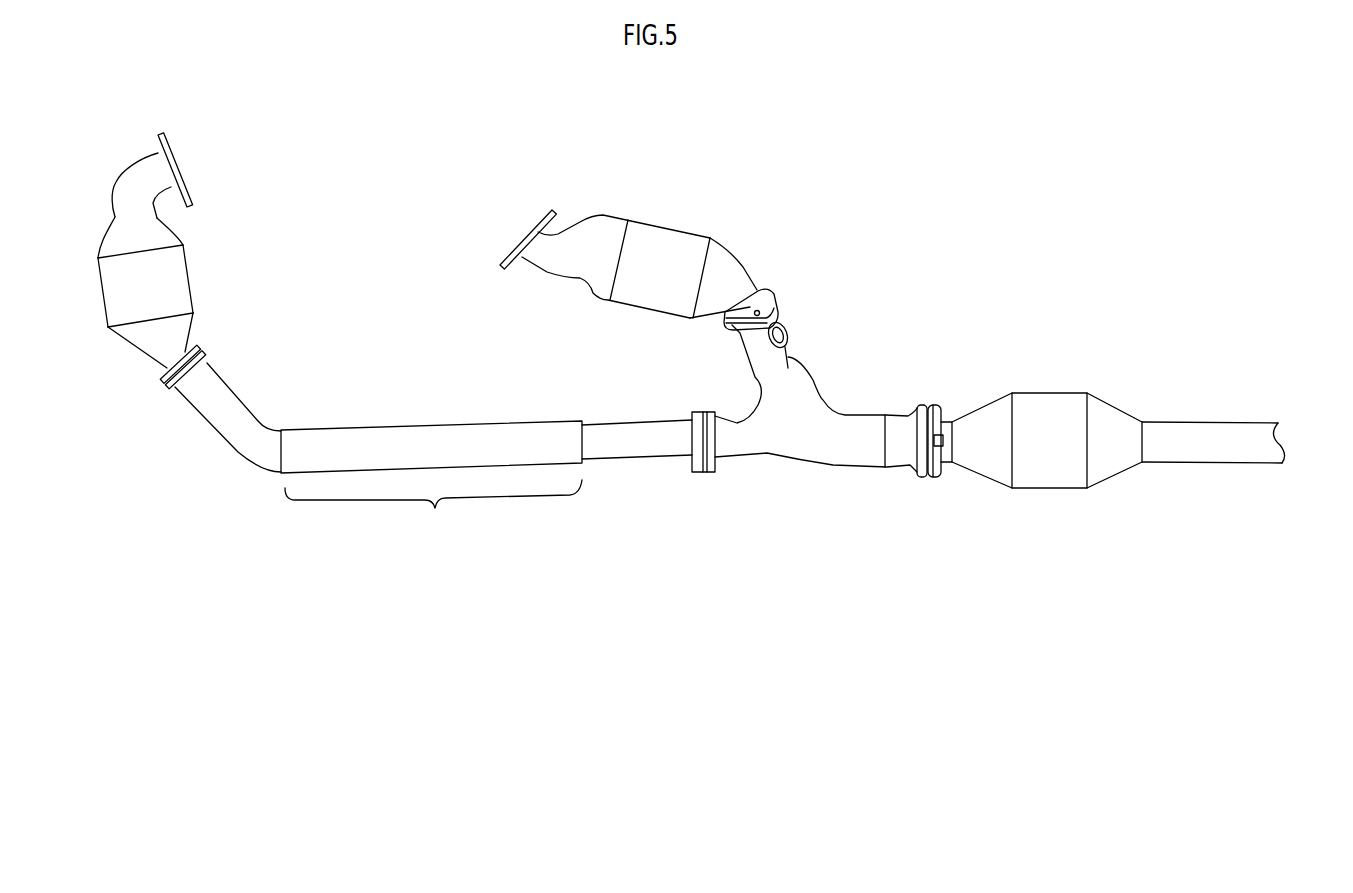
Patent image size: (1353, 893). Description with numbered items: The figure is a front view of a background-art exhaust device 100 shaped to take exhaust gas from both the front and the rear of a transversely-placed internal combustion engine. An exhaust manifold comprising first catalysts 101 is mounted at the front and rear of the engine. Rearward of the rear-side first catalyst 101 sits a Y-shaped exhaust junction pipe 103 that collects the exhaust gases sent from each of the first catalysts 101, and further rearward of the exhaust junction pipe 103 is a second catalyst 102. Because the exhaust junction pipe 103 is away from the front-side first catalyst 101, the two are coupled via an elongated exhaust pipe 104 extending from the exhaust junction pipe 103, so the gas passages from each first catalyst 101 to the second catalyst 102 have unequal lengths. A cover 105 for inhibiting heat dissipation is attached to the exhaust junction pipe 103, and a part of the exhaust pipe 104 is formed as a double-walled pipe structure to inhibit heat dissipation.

The exhaust device 100 is at (961, 143).
The first catalyst 101 is at (190, 267).
The second catalyst 102 is at (1045, 393).
The exhaust junction pipe 103 is at (920, 407).
The exhaust pipe 104 is at (233, 438).
The cover 105 is at (770, 457).